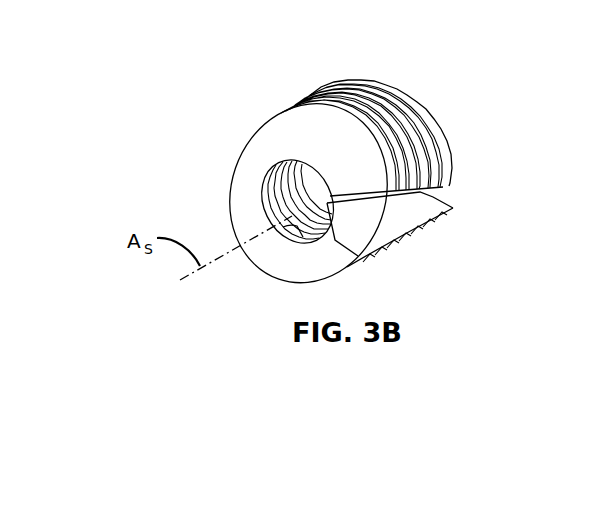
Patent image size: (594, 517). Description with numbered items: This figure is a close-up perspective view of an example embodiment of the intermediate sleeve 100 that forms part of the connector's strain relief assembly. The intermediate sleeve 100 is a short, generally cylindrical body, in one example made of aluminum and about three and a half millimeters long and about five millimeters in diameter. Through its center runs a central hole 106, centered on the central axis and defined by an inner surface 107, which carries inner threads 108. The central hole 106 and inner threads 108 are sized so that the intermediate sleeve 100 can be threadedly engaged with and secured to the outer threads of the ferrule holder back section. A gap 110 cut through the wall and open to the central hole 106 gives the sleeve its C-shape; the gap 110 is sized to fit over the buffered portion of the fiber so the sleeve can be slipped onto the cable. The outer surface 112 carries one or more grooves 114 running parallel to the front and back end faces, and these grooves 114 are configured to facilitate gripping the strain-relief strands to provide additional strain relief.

The intermediate sleeve 100 is at (282, 70).
The central hole 106 is at (274, 193).
The inner surface 107 is at (273, 181).
The inner threads 108 is at (283, 227).
The gap 110 is at (455, 190).
The outer surface 112 is at (369, 85).
The grooves 114 is at (401, 106).